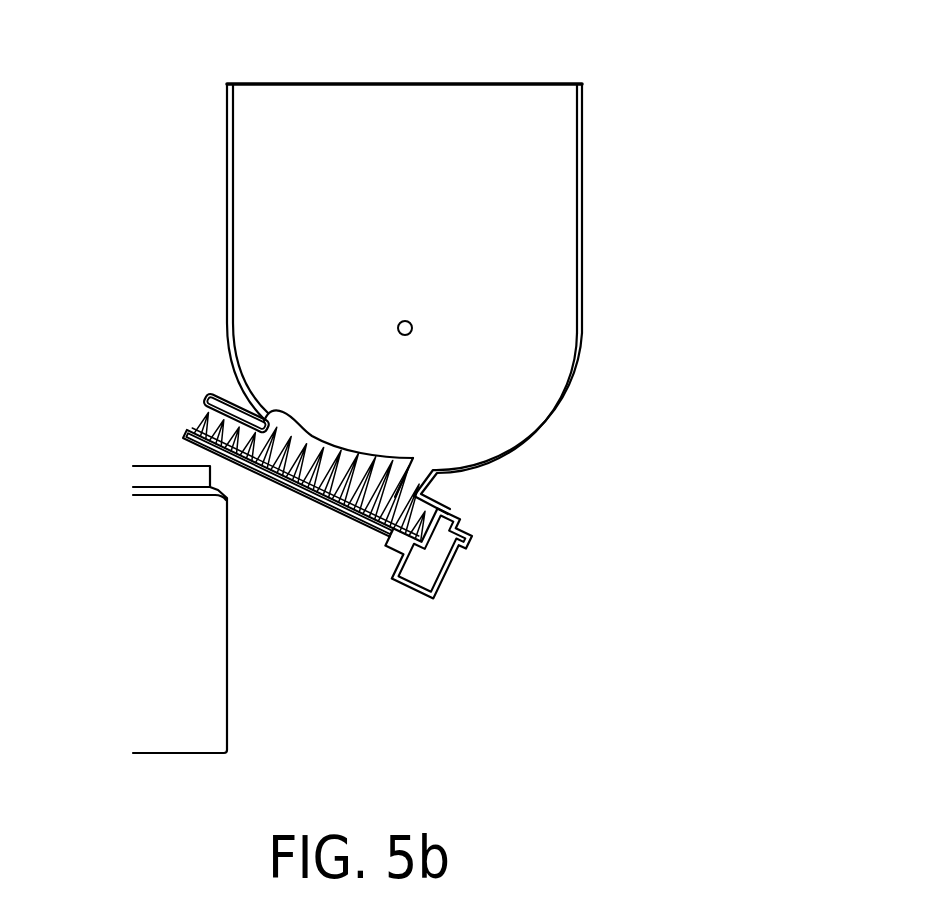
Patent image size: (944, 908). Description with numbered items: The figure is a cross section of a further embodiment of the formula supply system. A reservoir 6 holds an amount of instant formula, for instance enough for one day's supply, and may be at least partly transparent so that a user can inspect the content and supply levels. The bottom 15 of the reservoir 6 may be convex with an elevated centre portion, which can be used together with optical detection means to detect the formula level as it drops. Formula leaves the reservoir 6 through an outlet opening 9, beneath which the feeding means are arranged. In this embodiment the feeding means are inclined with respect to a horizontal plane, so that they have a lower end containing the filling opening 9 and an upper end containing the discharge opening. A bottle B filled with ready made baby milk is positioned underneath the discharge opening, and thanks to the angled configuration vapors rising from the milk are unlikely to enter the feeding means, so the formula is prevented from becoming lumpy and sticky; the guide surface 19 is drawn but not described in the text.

The reservoir 6 is at (404, 266).
The outlet opening 9 is at (385, 463).
The bottom 15 is at (503, 433).
The guide surface 19 is at (345, 457).
The bottle B is at (163, 620).